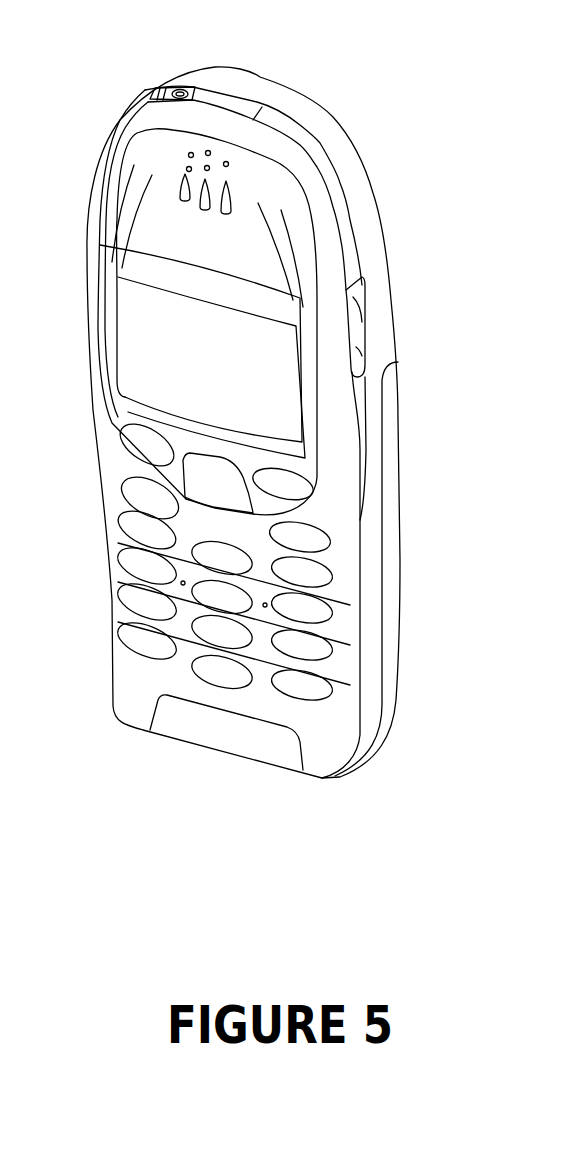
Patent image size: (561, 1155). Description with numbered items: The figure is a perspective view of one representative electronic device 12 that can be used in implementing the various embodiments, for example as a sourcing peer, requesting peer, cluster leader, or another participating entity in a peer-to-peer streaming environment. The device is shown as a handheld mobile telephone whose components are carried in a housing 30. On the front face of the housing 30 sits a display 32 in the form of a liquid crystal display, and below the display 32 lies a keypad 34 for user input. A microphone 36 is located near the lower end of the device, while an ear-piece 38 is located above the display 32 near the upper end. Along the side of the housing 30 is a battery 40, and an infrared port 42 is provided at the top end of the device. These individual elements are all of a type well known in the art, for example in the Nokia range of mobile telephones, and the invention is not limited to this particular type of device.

The electronic device 12 is at (346, 73).
The housing 30 is at (370, 213).
The display 32 is at (280, 398).
The keypad 34 is at (300, 690).
The microphone 36 is at (172, 725).
The ear-piece 38 is at (200, 175).
The battery 40 is at (394, 673).
The infrared port 42 is at (227, 102).